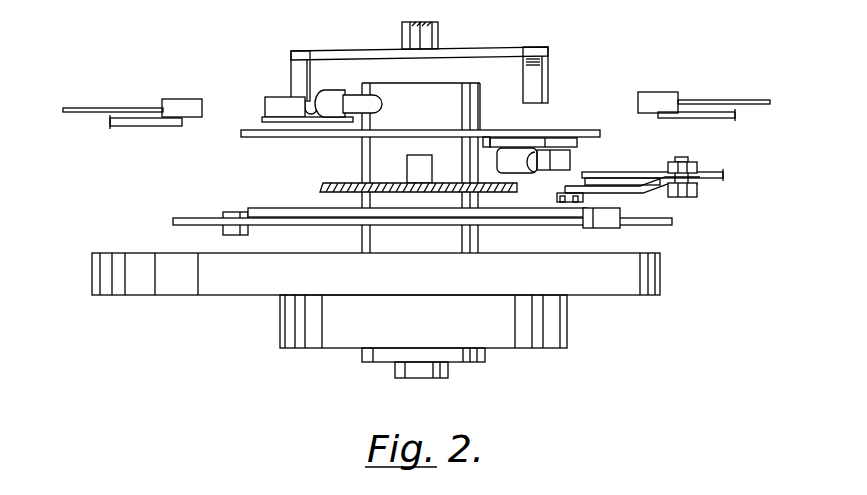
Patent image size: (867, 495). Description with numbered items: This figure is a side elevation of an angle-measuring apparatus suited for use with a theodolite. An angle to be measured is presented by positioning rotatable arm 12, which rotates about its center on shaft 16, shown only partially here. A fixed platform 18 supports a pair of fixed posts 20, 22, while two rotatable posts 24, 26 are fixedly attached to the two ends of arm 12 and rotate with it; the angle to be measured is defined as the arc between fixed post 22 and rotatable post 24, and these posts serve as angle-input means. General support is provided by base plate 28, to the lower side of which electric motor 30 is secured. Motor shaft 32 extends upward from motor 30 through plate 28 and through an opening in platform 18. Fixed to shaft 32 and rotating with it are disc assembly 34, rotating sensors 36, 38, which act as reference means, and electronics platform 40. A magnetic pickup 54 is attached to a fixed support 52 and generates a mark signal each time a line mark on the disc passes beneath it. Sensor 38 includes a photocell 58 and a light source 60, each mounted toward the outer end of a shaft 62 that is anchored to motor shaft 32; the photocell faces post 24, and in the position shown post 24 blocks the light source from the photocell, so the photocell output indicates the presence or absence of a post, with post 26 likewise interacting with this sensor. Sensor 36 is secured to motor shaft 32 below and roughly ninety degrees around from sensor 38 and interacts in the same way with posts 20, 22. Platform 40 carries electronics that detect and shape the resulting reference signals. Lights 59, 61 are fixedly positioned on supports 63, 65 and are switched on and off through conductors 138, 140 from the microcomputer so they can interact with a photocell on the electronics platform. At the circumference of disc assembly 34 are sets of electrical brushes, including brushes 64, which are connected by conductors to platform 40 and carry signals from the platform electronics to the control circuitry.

The rotatable arm 12 is at (512, 47).
The shaft 16 is at (438, 22).
The fixed platform 18 is at (338, 183).
The fixed post 20 is at (278, 210).
The fixed post 22 is at (408, 172).
The rotatable post 24 is at (302, 67).
The rotatable post 26 is at (538, 80).
The base plate 28 is at (133, 253).
The electric motor 30 is at (295, 325).
The motor shaft 32 is at (482, 100).
The disc assembly 34 is at (196, 209).
The rotating sensor 36 is at (590, 143).
The rotating sensor 38 is at (256, 99).
The electronics platform 40 is at (248, 137).
The fixed support 52 is at (710, 180).
The magnetic pickup 54 is at (623, 192).
The photocell 58 is at (287, 98).
The light 59 is at (175, 99).
The light source 60 is at (332, 90).
The light 61 is at (655, 95).
The shaft 62 is at (382, 100).
The support 63 is at (128, 127).
The electrical brushes 64 is at (612, 225).
The support 65 is at (735, 115).
The conductor 138 is at (753, 100).
The conductor 140 is at (85, 108).